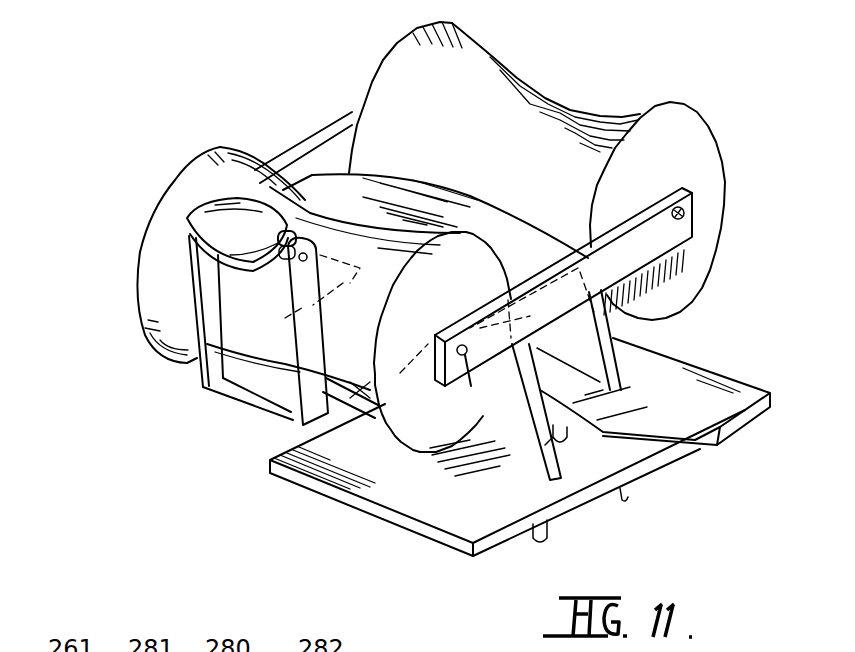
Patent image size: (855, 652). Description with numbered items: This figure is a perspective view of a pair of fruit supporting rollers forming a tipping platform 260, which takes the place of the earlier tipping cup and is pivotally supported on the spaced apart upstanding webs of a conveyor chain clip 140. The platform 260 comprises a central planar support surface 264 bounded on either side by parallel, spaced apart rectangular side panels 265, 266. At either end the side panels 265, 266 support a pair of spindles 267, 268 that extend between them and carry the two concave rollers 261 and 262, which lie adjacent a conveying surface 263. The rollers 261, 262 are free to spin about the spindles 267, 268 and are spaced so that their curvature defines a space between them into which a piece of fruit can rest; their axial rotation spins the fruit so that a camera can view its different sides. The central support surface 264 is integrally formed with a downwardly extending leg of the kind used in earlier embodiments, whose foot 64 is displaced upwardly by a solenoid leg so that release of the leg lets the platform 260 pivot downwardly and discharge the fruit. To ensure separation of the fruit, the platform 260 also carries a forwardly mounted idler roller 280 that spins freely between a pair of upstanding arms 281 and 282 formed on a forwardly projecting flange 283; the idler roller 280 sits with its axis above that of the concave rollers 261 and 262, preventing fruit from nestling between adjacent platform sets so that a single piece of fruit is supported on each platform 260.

The platform 260 is at (596, 90).
The roller 261 is at (168, 318).
The roller 262 is at (470, 129).
The conveying surface 263 is at (535, 255).
The central planar support surface 264 is at (353, 187).
The side panel 265 is at (613, 268).
The side panel 266 is at (290, 140).
The spindle 267 is at (471, 388).
The spindle 268 is at (684, 213).
The idler roller 280 is at (189, 206).
The upstanding arm 281 is at (200, 279).
The upstanding arm 282 is at (273, 410).
The forwardly projecting flange 283 is at (240, 371).
The conveyor chain clip 140 is at (600, 460).
The foot 64 is at (727, 441).